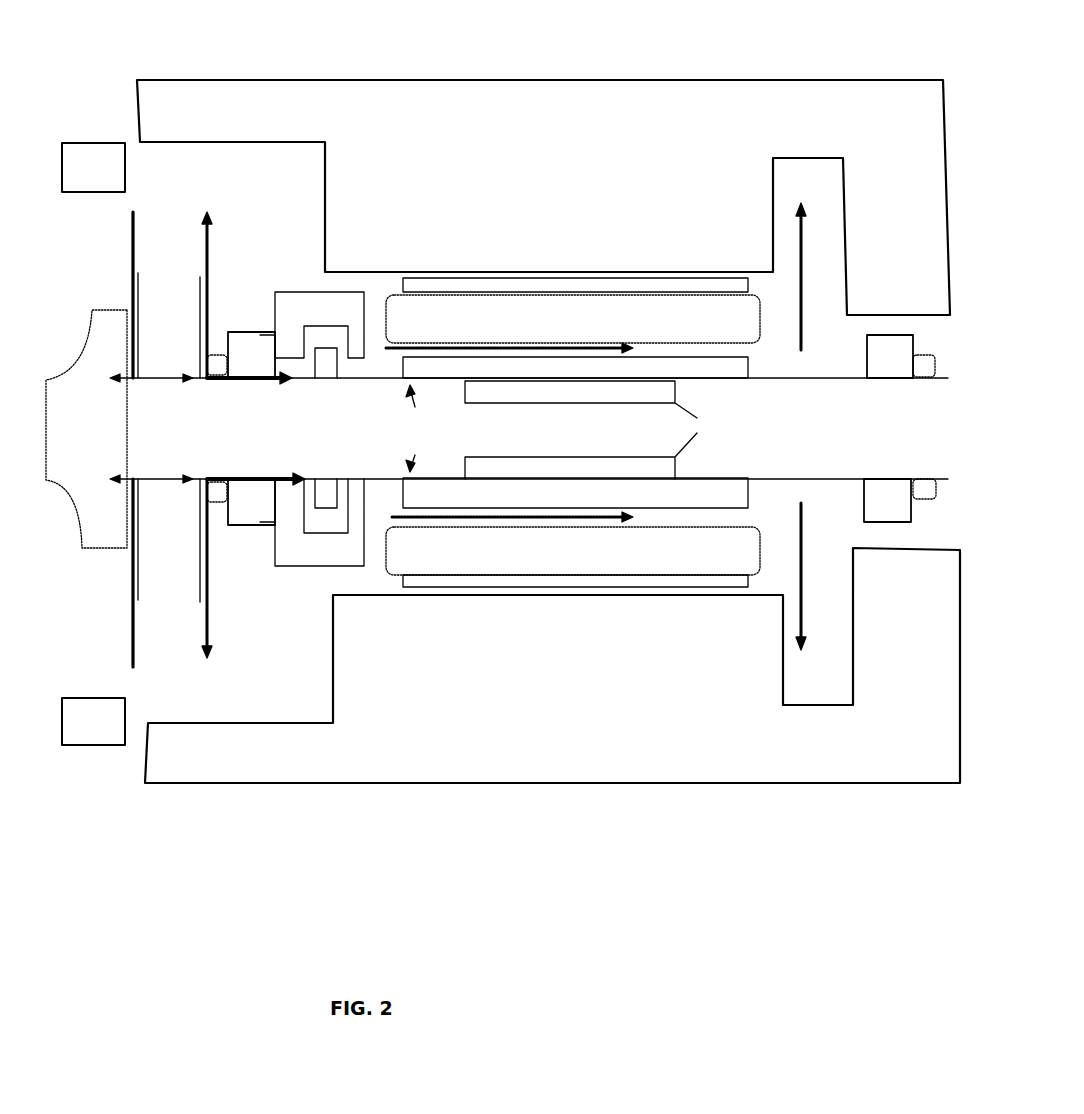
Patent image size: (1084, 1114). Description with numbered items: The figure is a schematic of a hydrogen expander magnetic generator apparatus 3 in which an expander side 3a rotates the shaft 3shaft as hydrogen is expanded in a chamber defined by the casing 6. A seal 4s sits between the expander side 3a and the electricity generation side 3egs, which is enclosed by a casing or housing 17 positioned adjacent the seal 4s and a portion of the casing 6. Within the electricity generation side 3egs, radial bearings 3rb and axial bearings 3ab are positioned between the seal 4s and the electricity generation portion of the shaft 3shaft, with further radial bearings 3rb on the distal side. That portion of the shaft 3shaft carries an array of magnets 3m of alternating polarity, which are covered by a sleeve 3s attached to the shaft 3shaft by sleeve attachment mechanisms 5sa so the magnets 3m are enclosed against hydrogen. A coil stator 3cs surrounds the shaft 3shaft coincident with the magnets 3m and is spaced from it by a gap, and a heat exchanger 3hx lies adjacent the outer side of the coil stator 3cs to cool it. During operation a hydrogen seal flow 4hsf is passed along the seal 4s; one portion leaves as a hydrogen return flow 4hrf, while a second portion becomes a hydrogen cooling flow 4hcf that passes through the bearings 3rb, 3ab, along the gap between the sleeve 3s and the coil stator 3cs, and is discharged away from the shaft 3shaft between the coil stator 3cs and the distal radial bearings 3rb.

The casing or housing 17 is at (355, 118).
The housing or casing 6 is at (95, 158).
The seal 4s is at (180, 300).
The hydrogen seal flow 4hsf is at (130, 233).
The expander side 3a is at (52, 374).
The hydrogen return flow 4hrf is at (208, 258).
The radial bearings 3rb is at (257, 350).
The axial bearings 3ab is at (305, 357).
The hydrogen cooling flow 4hcf is at (257, 382).
The sleeve attachment mechanisms 5sa is at (418, 428).
The heat exchanger 3hx is at (517, 283).
The coil stator 3cs is at (597, 308).
The array of magnets 3m is at (603, 430).
The sleeve 3s is at (743, 490).
The electricity generation side 3egs is at (507, 640).
The shaft 3shaft is at (838, 473).
The hydrogen expander magnetic generator apparatus 3 is at (660, 855).